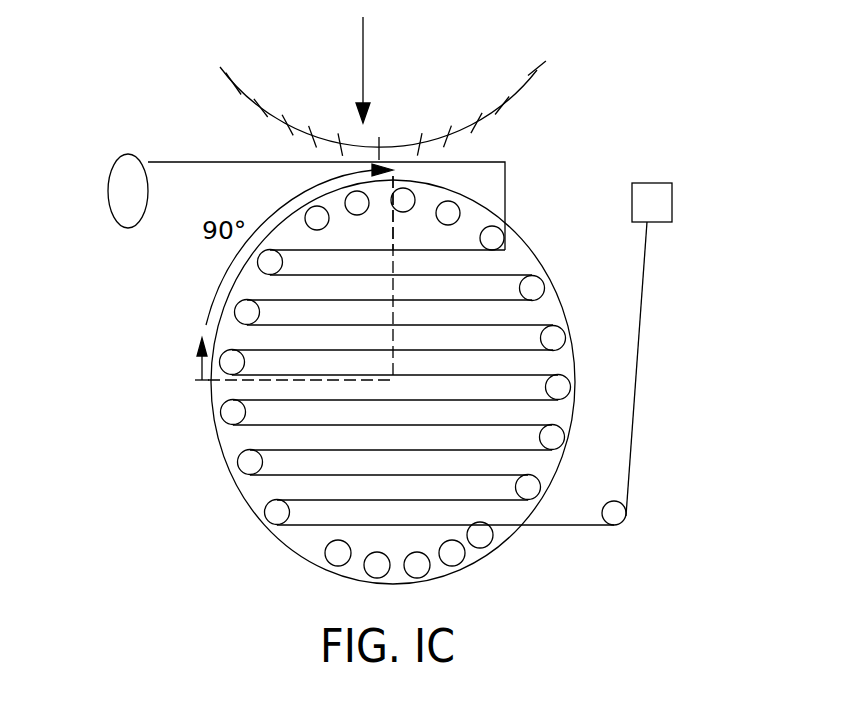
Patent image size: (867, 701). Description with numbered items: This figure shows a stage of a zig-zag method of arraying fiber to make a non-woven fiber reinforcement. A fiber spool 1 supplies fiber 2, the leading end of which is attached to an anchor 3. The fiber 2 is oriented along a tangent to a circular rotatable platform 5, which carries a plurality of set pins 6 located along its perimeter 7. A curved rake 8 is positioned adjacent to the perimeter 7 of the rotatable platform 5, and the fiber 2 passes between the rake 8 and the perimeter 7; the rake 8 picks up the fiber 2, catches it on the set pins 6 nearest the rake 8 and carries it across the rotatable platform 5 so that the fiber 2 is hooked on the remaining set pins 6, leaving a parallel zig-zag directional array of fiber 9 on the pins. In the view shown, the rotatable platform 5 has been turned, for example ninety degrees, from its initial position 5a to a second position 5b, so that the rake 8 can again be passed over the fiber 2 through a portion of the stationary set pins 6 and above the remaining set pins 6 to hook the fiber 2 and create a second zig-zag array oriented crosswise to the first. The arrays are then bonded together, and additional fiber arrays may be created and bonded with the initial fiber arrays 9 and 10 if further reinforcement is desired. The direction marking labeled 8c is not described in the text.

The fiber spool 1 is at (108, 210).
The fiber 2 is at (195, 162).
The anchor 3 is at (672, 200).
The circular rotatable platform 5 is at (311, 289).
The initial position 5a is at (182, 365).
The second position 5b is at (412, 213).
The set pins 6 is at (414, 552).
The perimeter 7 is at (282, 540).
The curved rake 8 is at (515, 101).
The incident direction arrow 8c is at (384, 70).
The array of fiber 9 is at (268, 476).
The initial fiber array 10 is at (626, 521).